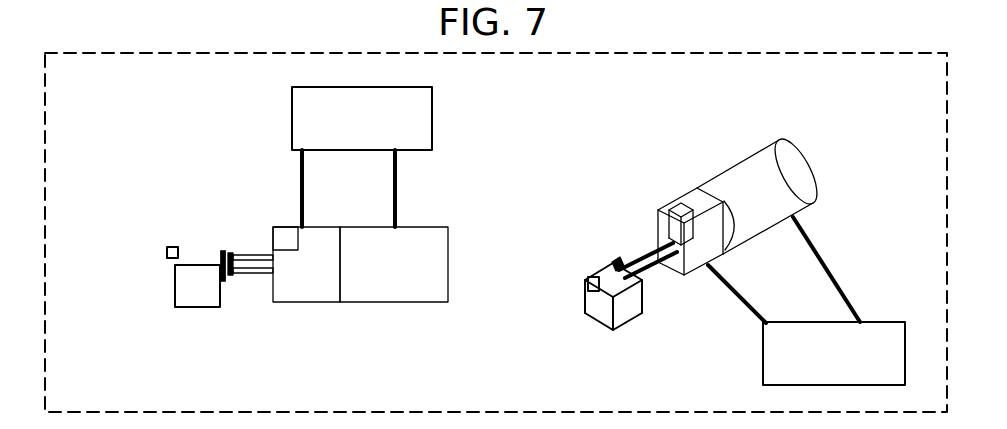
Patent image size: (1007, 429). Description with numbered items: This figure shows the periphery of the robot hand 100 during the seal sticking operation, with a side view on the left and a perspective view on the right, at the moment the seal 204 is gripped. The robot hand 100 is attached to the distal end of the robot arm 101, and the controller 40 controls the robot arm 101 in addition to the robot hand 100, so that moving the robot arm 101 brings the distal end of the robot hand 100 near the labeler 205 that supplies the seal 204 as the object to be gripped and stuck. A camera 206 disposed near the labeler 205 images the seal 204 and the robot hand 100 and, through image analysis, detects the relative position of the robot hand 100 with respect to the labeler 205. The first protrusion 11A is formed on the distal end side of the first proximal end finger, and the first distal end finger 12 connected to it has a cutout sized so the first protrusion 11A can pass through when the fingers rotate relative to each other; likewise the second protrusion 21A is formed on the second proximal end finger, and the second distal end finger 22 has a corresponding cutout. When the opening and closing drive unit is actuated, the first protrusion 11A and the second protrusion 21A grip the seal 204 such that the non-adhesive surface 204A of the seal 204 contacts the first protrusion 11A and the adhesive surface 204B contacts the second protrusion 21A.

The first protrusion 11A is at (228, 256).
The first distal end finger 12 is at (240, 258).
The second protrusion 21A is at (232, 274).
The second distal end finger 22 is at (250, 274).
The controller 40 is at (433, 120).
The robot hand 100 is at (323, 227).
The robot arm 101 is at (430, 227).
The seal 204 is at (222, 258).
The non-adhesive surface 204A is at (222, 258).
The adhesive surface 204B is at (222, 274).
The labeler 205 is at (187, 297).
The camera 206 is at (167, 252).